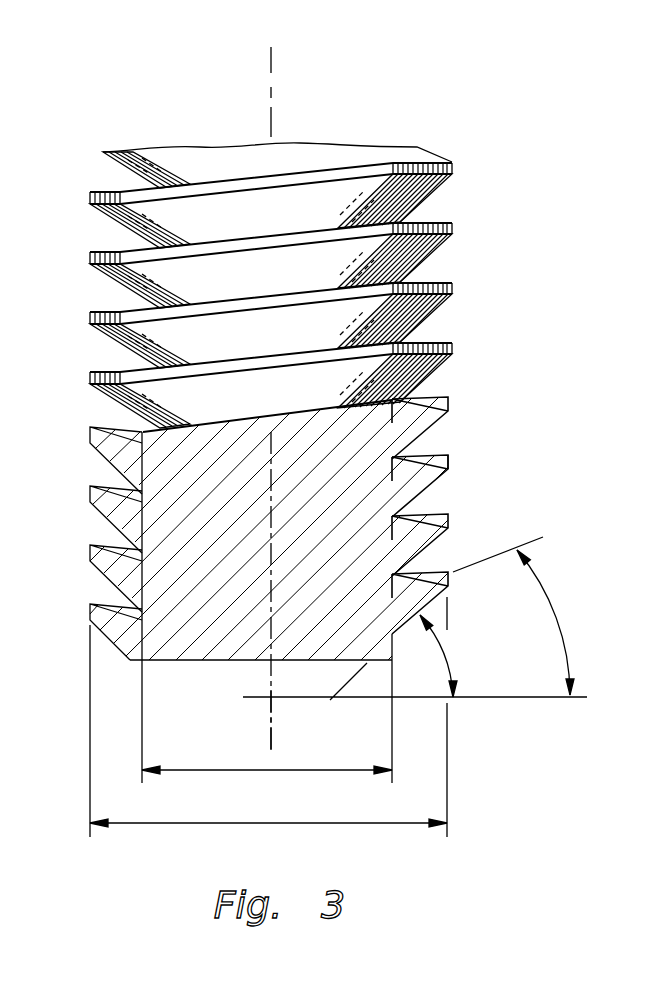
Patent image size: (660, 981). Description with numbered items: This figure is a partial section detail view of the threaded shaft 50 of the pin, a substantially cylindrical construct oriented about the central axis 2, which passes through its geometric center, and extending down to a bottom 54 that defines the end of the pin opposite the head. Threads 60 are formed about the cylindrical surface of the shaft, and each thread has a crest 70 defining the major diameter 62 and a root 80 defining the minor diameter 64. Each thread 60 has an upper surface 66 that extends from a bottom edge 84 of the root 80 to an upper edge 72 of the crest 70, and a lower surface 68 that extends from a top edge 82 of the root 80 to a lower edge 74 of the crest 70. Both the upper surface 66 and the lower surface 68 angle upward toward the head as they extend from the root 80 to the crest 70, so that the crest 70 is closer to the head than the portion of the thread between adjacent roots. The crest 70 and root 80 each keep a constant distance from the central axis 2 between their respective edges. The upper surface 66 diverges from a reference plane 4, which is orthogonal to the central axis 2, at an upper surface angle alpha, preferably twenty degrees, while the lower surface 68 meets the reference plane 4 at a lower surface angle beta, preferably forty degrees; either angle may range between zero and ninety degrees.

The central axis 2 is at (268, 733).
The reference plane 4 is at (478, 700).
The threaded shaft 50 is at (347, 415).
The bottom 54 is at (165, 662).
The threads 60 is at (458, 208).
The major diameter 62 is at (267, 823).
The minor diameter 64 is at (268, 770).
The upper surface 66 is at (430, 516).
The lower surface 68 is at (433, 548).
The crest 70 is at (457, 397).
The upper edge 72 is at (450, 455).
The lower edge 74 is at (455, 468).
The root 80 is at (445, 368).
The top edge 82 is at (455, 417).
The bottom edge 84 is at (450, 443).
The upper surface angle alpha is at (553, 612).
The lower surface angle beta is at (447, 650).